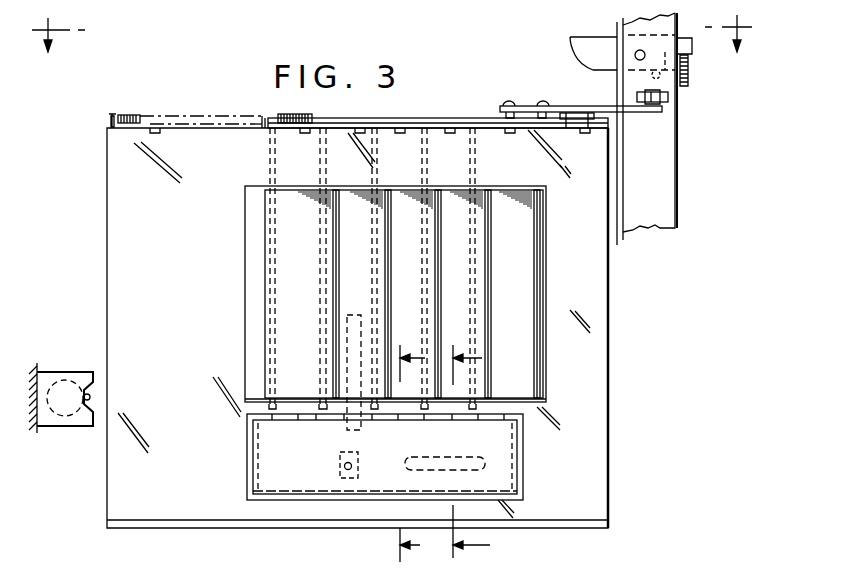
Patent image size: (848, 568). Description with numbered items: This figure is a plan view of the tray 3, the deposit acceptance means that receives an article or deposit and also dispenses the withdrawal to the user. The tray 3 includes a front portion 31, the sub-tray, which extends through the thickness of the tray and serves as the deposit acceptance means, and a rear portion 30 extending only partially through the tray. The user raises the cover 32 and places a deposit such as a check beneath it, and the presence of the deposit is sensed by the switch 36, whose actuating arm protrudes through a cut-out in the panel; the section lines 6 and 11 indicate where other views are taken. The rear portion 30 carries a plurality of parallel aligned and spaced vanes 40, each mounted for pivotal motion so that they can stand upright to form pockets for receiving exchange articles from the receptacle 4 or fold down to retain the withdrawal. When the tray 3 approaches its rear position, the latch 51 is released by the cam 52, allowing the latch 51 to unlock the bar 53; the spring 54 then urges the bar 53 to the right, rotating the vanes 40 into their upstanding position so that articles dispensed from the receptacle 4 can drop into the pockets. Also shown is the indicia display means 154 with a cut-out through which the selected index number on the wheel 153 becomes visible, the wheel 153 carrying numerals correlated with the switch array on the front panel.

The tray 3 is at (611, 291).
The receptacle 4 is at (392, 48).
The section line 6 is at (413, 450).
The section line 11 is at (480, 450).
The rear portion 30 is at (548, 292).
The front portion 31 is at (524, 459).
The cover 32 is at (306, 464).
The switch 36 is at (358, 470).
The vanes 40 is at (305, 304).
The latch 51 is at (568, 120).
The cam 52 is at (572, 36).
The bar 53 is at (447, 118).
The spring 54 is at (136, 114).
The wheel 153 is at (70, 420).
The indicia display means 154 is at (53, 372).